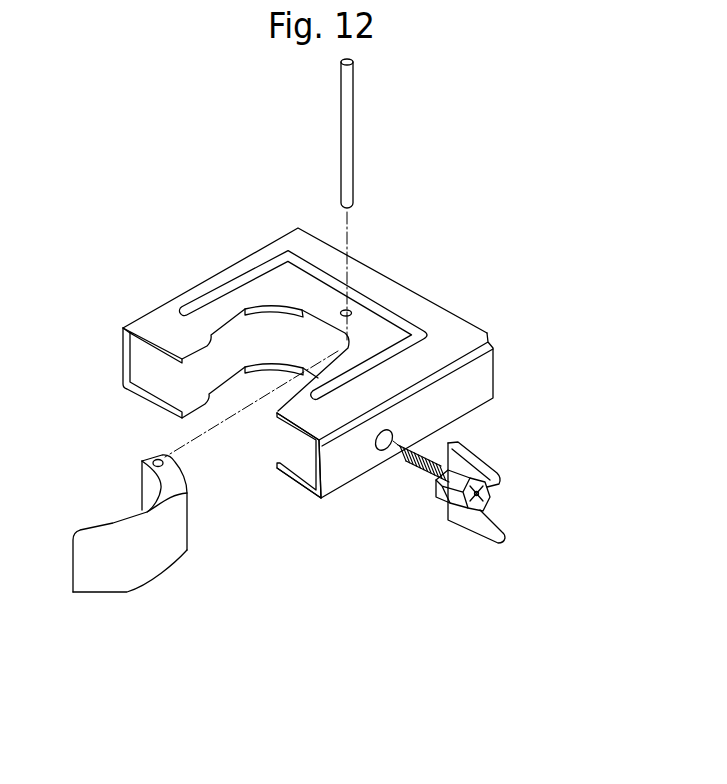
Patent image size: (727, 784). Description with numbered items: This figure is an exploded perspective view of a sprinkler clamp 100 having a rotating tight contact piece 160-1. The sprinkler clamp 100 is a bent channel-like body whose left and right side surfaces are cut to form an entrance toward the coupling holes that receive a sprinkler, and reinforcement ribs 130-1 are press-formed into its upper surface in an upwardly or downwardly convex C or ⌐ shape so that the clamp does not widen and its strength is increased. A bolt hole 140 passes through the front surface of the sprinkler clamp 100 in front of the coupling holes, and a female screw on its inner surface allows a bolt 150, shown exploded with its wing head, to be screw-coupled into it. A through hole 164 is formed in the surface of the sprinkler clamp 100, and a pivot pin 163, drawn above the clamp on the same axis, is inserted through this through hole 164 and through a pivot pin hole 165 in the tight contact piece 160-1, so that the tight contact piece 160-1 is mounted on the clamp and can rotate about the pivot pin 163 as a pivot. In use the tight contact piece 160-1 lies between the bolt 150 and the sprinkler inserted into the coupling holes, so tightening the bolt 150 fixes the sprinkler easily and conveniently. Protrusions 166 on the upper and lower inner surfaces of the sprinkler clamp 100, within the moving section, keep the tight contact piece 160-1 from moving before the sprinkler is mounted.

The sprinkler clamp 100 is at (347, 326).
The reinforcement ribs 130-1 is at (228, 288).
The bolt hole 140 is at (394, 442).
The bolt 150 is at (477, 527).
The tight contact piece 160-1 is at (196, 507).
The pivot pin 163 is at (353, 120).
The through hole 164 is at (347, 311).
The pivot pin hole 165 is at (154, 460).
The protrusions 166 is at (300, 412).